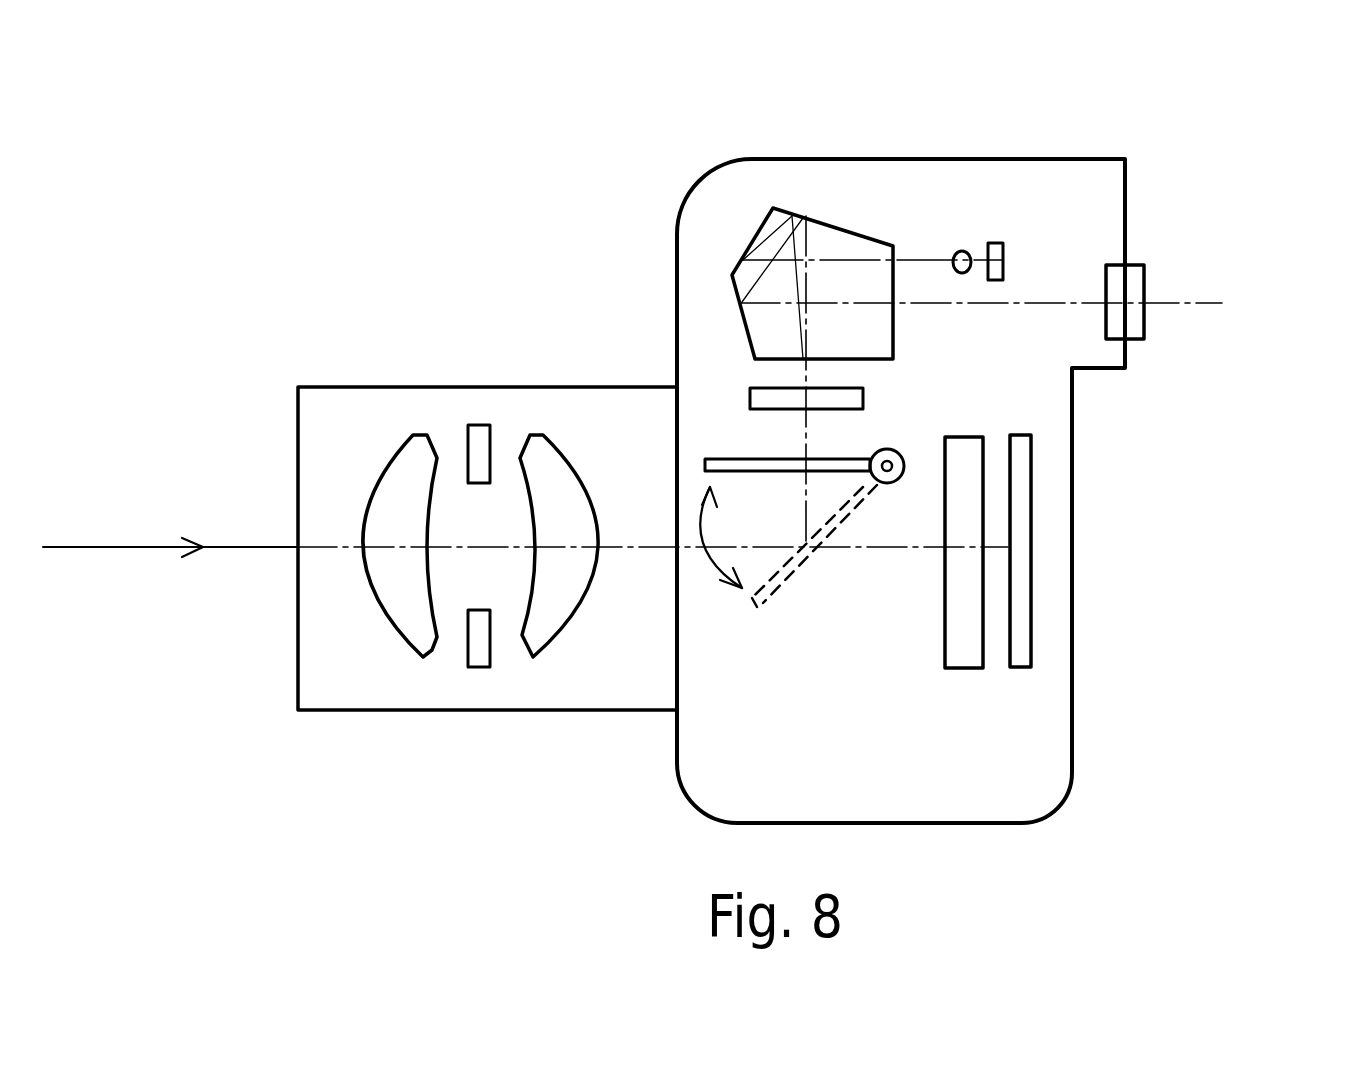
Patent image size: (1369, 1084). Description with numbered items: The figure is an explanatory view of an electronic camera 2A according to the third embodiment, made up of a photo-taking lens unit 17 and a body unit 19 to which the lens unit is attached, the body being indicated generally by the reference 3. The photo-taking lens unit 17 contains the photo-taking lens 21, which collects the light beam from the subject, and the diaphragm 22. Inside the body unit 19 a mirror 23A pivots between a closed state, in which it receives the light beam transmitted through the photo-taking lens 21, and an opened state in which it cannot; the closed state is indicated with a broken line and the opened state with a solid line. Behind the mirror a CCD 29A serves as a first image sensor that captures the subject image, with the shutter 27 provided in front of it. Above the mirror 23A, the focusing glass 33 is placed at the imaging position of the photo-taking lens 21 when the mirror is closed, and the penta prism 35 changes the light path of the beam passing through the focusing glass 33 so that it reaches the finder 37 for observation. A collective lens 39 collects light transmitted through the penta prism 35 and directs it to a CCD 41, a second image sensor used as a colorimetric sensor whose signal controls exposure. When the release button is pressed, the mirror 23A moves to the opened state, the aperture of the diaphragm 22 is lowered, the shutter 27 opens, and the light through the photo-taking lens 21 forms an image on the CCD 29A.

The electronic camera 2A is at (1023, 125).
The camera body unit 3 is at (1195, 348).
The photo-taking lens unit 17 is at (520, 688).
The body unit 19 is at (1045, 728).
The photo-taking lens 21 is at (553, 467).
The diaphragm 22 is at (480, 648).
The mirror 23A is at (728, 460).
The shutter 27 is at (967, 448).
The CCD 29A is at (1022, 488).
The focusing glass 33 is at (757, 388).
The penta prism 35 is at (828, 238).
The finder 37 is at (1133, 290).
The collective lens 39 is at (967, 251).
The CCD 41 is at (1003, 255).